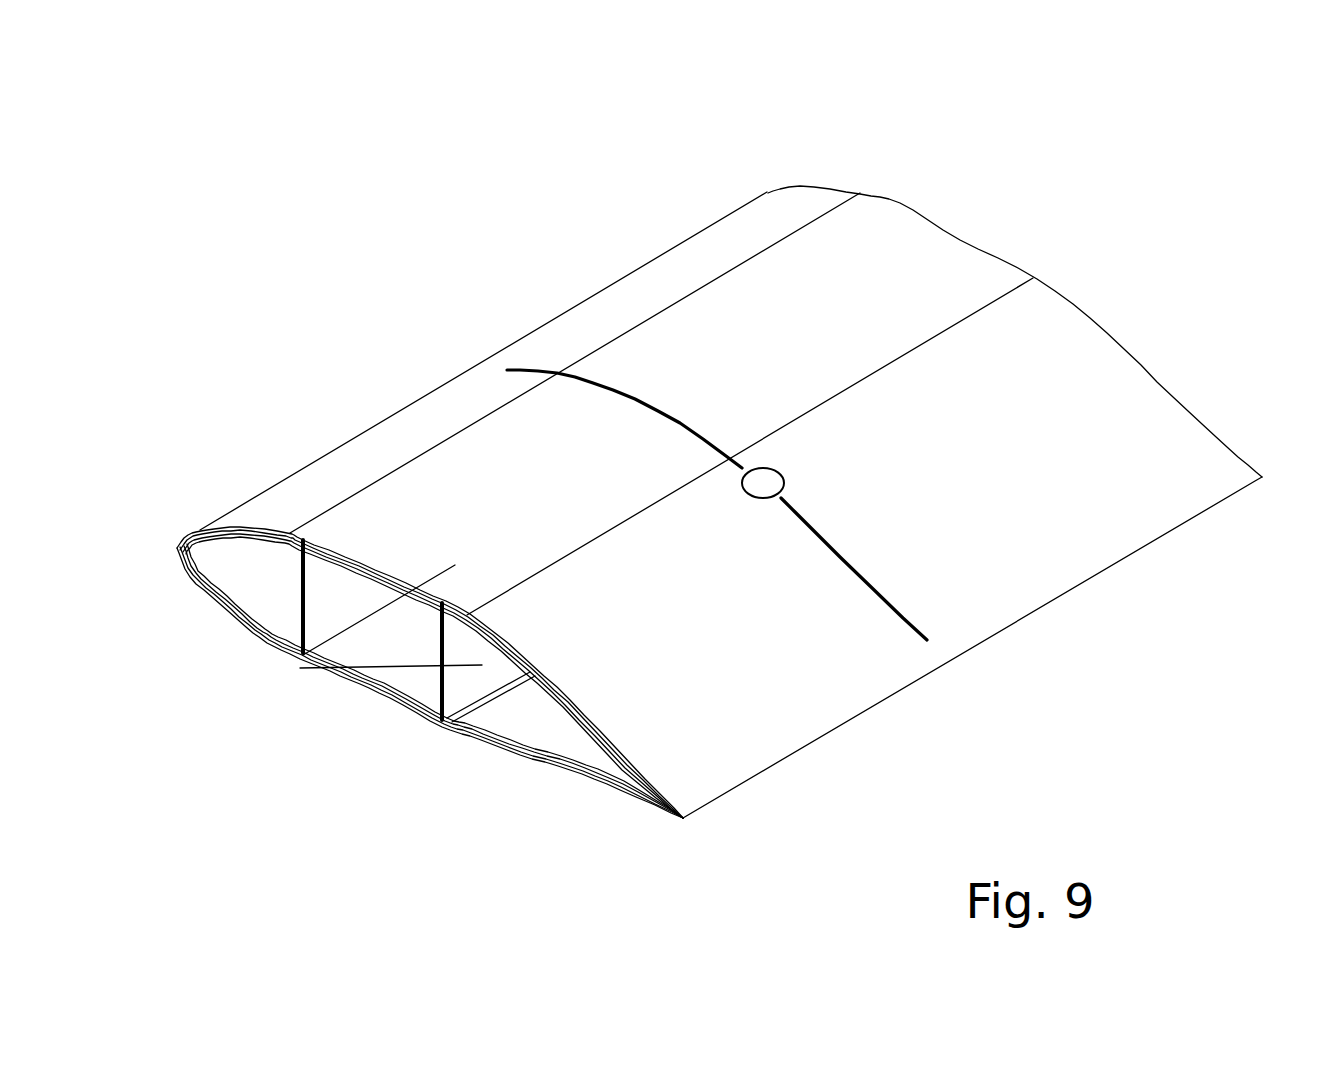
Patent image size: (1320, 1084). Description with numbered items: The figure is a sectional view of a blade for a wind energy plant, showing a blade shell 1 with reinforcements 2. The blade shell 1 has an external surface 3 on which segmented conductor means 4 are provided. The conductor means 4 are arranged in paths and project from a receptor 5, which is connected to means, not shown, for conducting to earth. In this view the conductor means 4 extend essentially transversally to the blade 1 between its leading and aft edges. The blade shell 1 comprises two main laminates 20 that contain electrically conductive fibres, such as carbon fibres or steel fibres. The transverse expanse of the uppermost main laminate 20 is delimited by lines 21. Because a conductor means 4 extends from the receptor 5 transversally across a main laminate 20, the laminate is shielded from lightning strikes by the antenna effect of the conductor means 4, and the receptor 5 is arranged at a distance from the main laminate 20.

The blade shell 1 is at (527, 273).
The reinforcements 2 is at (323, 592).
The external surface 3 is at (853, 687).
The conductor means 4 is at (503, 377).
The receptor 5 is at (758, 477).
The main laminate 20 is at (330, 568).
The lines 21 is at (727, 268).